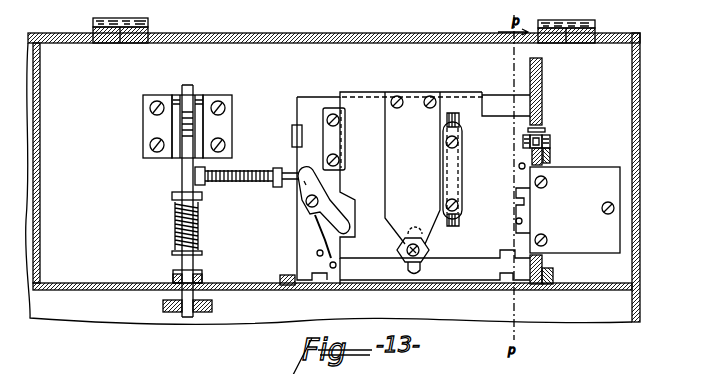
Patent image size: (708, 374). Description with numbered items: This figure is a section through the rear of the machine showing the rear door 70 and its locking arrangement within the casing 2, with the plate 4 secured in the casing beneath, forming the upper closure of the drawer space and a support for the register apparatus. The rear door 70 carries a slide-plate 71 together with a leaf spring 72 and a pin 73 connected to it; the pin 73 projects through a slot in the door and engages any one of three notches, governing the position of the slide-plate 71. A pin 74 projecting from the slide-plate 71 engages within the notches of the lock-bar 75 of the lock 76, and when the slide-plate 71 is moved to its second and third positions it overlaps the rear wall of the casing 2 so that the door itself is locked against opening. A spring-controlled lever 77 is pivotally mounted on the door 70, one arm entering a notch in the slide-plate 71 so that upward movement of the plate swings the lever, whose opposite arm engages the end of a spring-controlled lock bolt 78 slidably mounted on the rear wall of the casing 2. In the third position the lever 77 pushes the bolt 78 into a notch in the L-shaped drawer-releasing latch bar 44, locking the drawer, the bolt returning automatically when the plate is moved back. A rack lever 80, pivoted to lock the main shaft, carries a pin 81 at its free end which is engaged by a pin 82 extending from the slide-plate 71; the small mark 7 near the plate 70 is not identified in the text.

The casing 2 is at (652, 279).
The plate 4 is at (598, 293).
The plate 7 is at (475, 281).
The latch bar 44 is at (182, 177).
The rear door 70 is at (468, 296).
The slide-plate 71 is at (480, 101).
The leaf spring 72 is at (398, 164).
The pin 73 is at (430, 250).
The pin 74 is at (524, 221).
The lock-bar 75 is at (527, 208).
The lock 76 is at (620, 189).
The spring-controlled lever 77 is at (306, 191).
The lock bolt 78 is at (256, 168).
The rack lever 80 is at (552, 158).
The pin 81 is at (549, 142).
The pin 82 is at (519, 168).